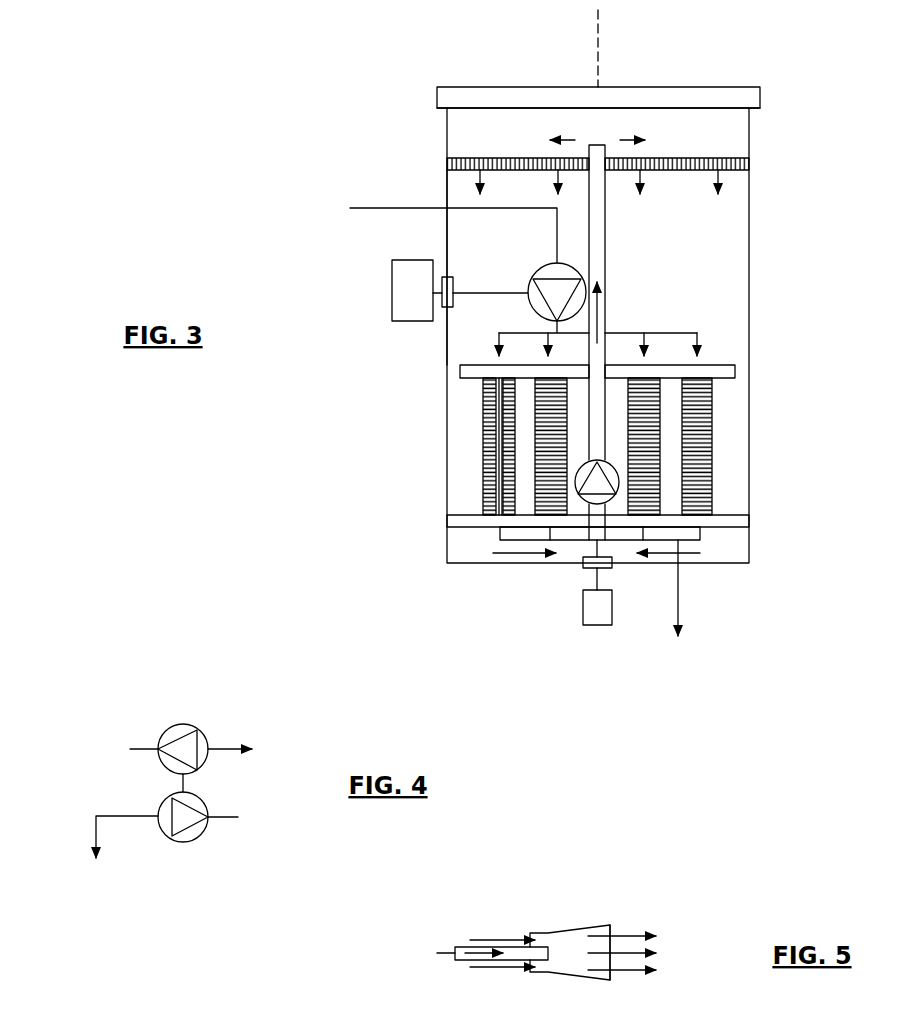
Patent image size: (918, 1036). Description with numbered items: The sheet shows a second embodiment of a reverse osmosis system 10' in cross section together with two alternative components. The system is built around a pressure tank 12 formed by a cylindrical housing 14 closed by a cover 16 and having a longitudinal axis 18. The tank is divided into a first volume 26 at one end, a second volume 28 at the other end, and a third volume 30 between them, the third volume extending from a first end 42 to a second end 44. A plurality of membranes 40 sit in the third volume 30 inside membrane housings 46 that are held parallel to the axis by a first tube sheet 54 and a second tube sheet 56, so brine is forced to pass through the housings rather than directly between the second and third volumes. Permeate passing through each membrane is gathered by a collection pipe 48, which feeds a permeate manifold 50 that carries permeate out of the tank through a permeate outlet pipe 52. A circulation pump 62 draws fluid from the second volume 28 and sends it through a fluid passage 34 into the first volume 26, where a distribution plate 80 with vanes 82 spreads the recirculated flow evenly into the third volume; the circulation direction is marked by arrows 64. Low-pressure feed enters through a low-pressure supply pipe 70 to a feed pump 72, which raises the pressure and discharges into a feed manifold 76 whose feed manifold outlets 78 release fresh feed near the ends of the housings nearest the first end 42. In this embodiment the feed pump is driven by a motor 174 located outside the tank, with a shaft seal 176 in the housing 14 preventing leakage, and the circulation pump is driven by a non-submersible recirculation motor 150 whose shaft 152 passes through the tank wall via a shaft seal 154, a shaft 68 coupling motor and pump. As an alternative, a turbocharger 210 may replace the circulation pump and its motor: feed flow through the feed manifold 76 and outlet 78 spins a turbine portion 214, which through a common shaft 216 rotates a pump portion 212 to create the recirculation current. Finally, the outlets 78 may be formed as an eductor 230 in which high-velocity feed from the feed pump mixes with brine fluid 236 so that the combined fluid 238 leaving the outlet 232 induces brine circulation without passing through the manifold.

In FIG. 3, the reverse osmosis system 10' is at (565, 72).
In FIG. 3, the cover 16 is at (460, 97).
In FIG. 3, the longitudinal axis 18 is at (602, 28).
In FIG. 3, the pressure tank 12 is at (440, 112).
In FIG. 3, the housing 14 is at (447, 176).
In FIG. 3, the first volume 26 is at (655, 130).
In FIG. 3, the distribution plate 80 is at (507, 160).
In FIG. 3, the vanes 82 is at (543, 165).
In FIG. 3, the first end 42 is at (731, 200).
In FIG. 3, the third volume 30 is at (726, 222).
In FIG. 3, the arrows 64 is at (572, 140).
In FIG. 3, the fluid passage 34 is at (606, 252).
In FIG. 3, the low-pressure supply pipe 70 is at (368, 209).
In FIG. 3, the feed pump 72 is at (568, 263).
In FIG. 3, the motor 174 is at (392, 293).
In FIG. 3, the shaft seal 176 is at (453, 281).
In FIG. 3, the feed manifold 76 is at (551, 333).
In FIG. 4, the feed manifold 76 is at (222, 817).
In FIG. 5, the feed manifold 76 is at (460, 960).
In FIG. 3, the feed manifold outlets 78 is at (499, 346).
In FIG. 4, the feed manifold outlets 78 is at (96, 830).
In FIG. 5, the feed manifold outlets 78 is at (545, 955).
In FIG. 3, the first tube sheet 54 is at (720, 372).
In FIG. 3, the membranes 40 is at (487, 403).
In FIG. 3, the collection pipe 48 is at (497, 422).
In FIG. 3, the membrane housing 46 is at (713, 405).
In FIG. 3, the second end 44 is at (722, 498).
In FIG. 3, the permeate manifold 50 is at (563, 543).
In FIG. 3, the second tube sheet 56 is at (732, 524).
In FIG. 3, the second volume 28 is at (468, 552).
In FIG. 3, the circulation pump 62 is at (585, 463).
In FIG. 3, the shaft 68 is at (600, 547).
In FIG. 3, the recirculation motor 150 is at (597, 626).
In FIG. 3, the shaft seal 154 is at (612, 569).
In FIG. 3, the shaft 152 is at (612, 591).
In FIG. 3, the permeate outlet pipe 52 is at (680, 615).
In FIG. 4, the turbocharger 210 is at (212, 716).
In FIG. 4, the pump portion 212 is at (178, 723).
In FIG. 4, the common shaft 216 is at (183, 783).
In FIG. 4, the turbine portion 214 is at (190, 842).
In FIG. 5, the eductor 230 is at (572, 968).
In FIG. 5, the brine fluid 236 is at (495, 940).
In FIG. 5, the outlet 232 is at (612, 926).
In FIG. 5, the combined fluid 238 is at (630, 971).